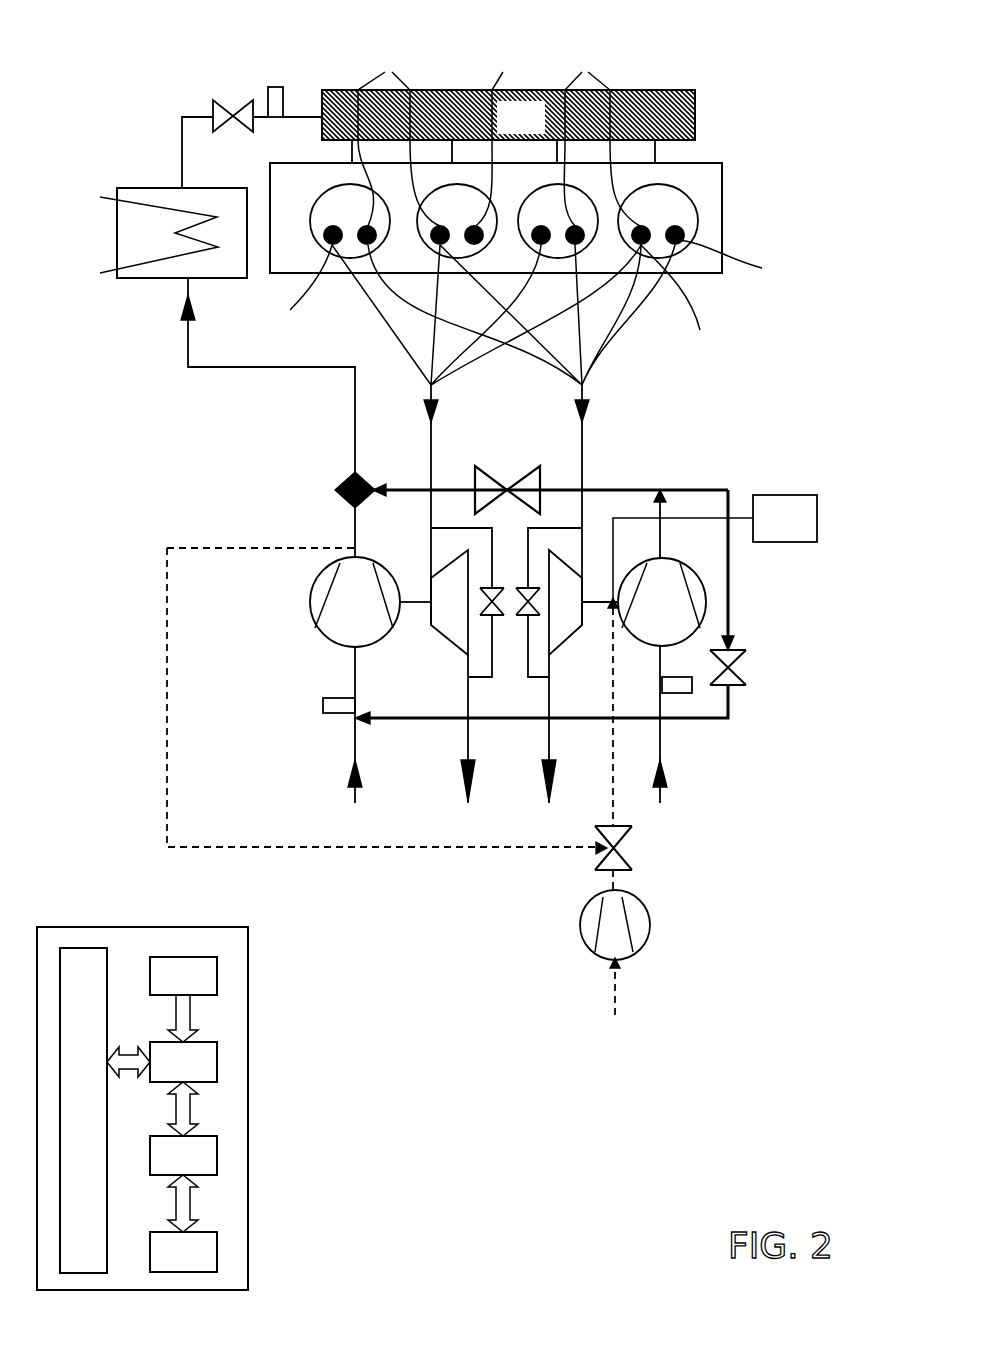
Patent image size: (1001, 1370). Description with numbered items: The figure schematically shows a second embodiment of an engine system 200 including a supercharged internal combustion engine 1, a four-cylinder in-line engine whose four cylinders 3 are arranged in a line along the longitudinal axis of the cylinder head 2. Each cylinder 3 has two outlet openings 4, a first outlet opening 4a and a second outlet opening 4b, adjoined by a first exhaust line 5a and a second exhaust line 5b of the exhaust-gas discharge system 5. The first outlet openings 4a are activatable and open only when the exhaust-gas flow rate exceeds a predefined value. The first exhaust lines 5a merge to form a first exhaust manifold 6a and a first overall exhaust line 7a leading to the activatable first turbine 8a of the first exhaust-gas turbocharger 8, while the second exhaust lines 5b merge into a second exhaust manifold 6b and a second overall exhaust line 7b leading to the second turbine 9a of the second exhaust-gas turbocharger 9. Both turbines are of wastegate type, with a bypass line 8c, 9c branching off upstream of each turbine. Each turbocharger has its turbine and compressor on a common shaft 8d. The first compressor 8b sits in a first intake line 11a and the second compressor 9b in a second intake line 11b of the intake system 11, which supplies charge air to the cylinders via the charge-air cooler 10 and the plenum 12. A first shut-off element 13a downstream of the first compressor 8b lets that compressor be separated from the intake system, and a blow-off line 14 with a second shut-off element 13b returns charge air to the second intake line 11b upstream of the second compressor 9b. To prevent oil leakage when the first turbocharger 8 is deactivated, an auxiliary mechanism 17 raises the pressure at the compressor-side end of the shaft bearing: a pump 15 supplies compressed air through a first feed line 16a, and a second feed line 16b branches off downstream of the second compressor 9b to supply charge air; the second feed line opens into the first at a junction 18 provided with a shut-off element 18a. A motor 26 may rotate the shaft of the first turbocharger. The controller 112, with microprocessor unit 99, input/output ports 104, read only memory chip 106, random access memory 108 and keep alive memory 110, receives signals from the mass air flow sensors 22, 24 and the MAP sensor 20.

The supercharged internal combustion engine 1 is at (715, 64).
The engine system 200 is at (664, 46).
The cylinder head 2 is at (300, 167).
The cylinders 3 is at (366, 221).
The outlet openings 4 is at (524, 196).
The first outlet opening 4a is at (502, 138).
The second outlet opening 4b is at (388, 72).
The exhaust-gas discharge system 5 is at (506, 369).
The first exhaust line 5a is at (583, 332).
The second exhaust line 5b is at (360, 315).
The first exhaust manifold 6a is at (622, 380).
The second exhaust manifold 6b is at (343, 350).
The first overall exhaust line 7a is at (583, 450).
The second overall exhaust line 7b is at (431, 462).
The first exhaust-gas turbocharger 8 is at (605, 665).
The first turbine 8a is at (574, 611).
The first compressor 8b is at (672, 611).
The bypass line 8c is at (537, 680).
The shaft 8d is at (605, 612).
The second exhaust-gas turbocharger 9 is at (411, 665).
The second turbine 9a is at (456, 611).
The second compressor 9b is at (366, 611).
The bypass line 9c is at (480, 680).
The charge-air cooler 10 is at (128, 235).
The intake system 11 is at (252, 455).
The first intake line 11a is at (665, 752).
The second intake line 11b is at (352, 752).
The plenum 12 is at (535, 130).
The first shut-off element 13a is at (487, 468).
The second shut-off element 13b is at (742, 660).
The blow-off line 14 is at (733, 548).
The pump 15 is at (590, 922).
The first feed line 16a is at (608, 770).
The second feed line 16b is at (215, 850).
The auxiliary mechanism 17 is at (558, 814).
The junction 18 is at (705, 896).
The shut-off element 18a is at (622, 840).
The MAP sensor 20 is at (278, 95).
The mass air flow sensor 22 is at (668, 682).
The mass air flow sensor 24 is at (338, 700).
The motor 26 is at (796, 527).
The microprocessor unit 99 is at (217, 1062).
The input/output ports 104 is at (107, 957).
The read only memory chip 106 is at (217, 975).
The random access memory 108 is at (217, 1155).
The keep alive memory 110 is at (217, 1248).
The controller 112 is at (179, 1096).